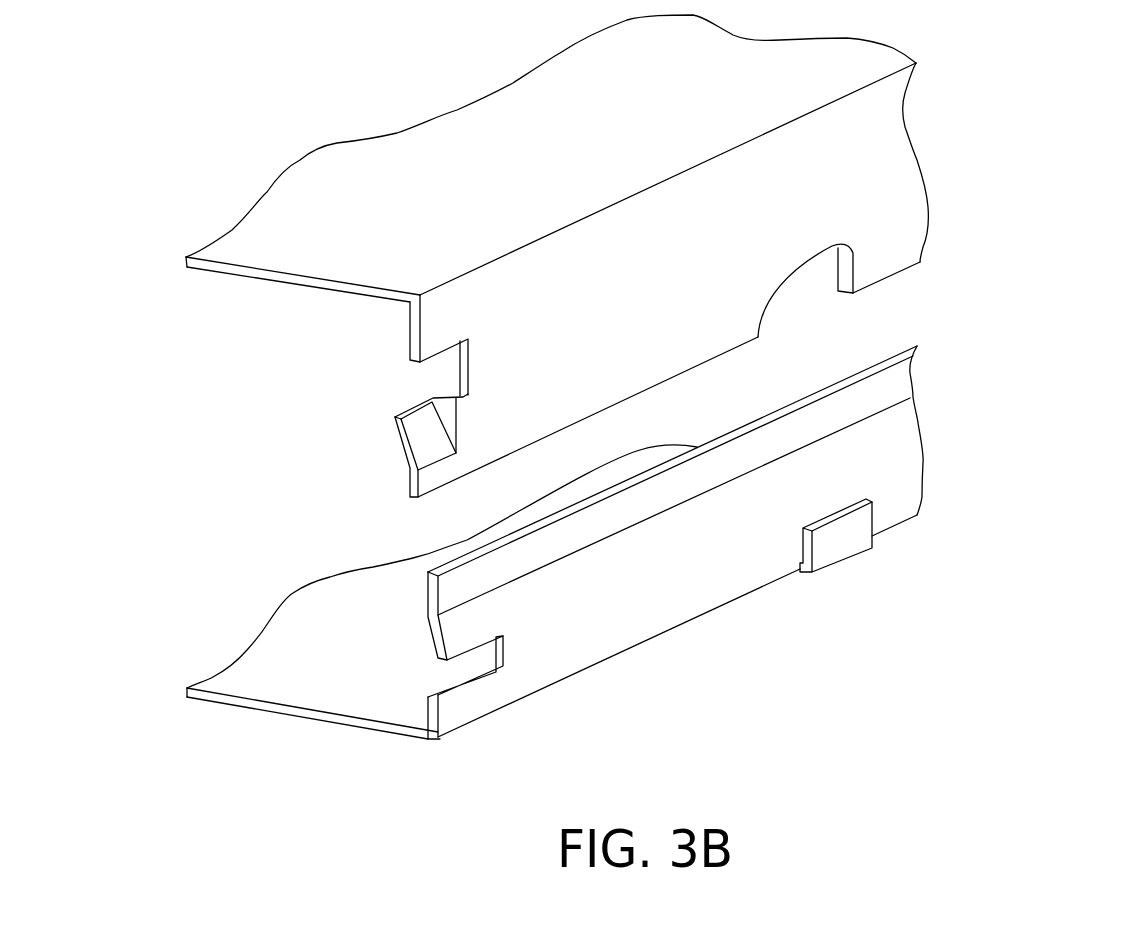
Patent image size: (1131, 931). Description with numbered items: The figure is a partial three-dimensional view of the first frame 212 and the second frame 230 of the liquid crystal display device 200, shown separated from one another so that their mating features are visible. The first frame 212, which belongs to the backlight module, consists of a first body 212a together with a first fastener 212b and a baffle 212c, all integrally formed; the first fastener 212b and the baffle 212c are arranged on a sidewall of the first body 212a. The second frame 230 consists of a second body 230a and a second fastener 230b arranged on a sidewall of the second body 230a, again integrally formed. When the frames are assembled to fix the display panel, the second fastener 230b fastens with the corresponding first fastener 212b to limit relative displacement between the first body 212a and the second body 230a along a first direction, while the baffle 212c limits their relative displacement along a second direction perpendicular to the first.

The liquid crystal display device 200 is at (655, 407).
The first frame 212 is at (630, 572).
The first body 212a is at (417, 732).
The first fastener 212b is at (438, 642).
The baffle 212c is at (828, 552).
The second frame 230 is at (655, 256).
The second body 230a is at (700, 318).
The second fastener 230b is at (408, 445).